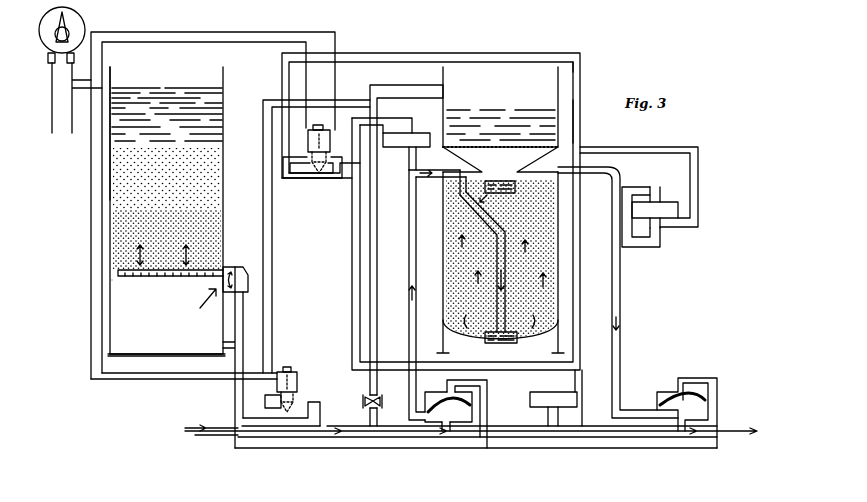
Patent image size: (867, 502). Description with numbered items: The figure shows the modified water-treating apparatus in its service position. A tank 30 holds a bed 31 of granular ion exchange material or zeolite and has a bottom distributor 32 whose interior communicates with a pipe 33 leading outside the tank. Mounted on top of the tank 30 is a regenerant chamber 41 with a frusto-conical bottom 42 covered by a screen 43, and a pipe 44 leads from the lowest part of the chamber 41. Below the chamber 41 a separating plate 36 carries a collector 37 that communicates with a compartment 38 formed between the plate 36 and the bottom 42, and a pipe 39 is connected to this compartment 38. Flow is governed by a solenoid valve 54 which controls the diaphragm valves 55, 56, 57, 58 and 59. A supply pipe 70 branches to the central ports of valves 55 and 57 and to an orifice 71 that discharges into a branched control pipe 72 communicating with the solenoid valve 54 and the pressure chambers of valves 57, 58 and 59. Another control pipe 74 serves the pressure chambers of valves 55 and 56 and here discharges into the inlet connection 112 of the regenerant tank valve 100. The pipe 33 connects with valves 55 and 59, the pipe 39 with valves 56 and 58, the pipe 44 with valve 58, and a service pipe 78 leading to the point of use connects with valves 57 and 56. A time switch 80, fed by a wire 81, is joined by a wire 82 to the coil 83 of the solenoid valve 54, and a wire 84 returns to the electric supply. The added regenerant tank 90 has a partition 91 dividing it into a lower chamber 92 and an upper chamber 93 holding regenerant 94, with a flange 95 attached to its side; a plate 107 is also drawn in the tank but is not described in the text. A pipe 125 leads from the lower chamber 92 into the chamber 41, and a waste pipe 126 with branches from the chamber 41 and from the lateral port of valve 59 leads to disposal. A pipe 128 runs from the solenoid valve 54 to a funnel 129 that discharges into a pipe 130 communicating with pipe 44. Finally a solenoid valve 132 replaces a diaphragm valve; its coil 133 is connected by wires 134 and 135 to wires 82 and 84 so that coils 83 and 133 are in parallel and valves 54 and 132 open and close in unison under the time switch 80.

The tank 30 is at (443, 321).
The bed 31 is at (453, 294).
The bottom distributor 32 is at (492, 344).
The pipe 33 is at (440, 177).
The separating plate 36 is at (452, 180).
The collector 37 is at (518, 187).
The compartment 38 is at (478, 213).
The pipe 39 is at (620, 172).
The regenerant chamber 41 is at (557, 78).
The bottom 42 is at (467, 171).
The screen 43 is at (500, 145).
The pipe 44 is at (681, 147).
The solenoid valve 54 is at (330, 182).
The diaphragm valve 55 is at (452, 409).
The diaphragm valve 56 is at (667, 390).
The diaphragm valve 57 is at (545, 392).
The diaphragm valve 58 is at (667, 197).
The diaphragm valve 59 is at (412, 133).
The supply pipe 70 is at (220, 436).
The orifice 71 is at (368, 395).
The control pipe 72 is at (352, 254).
The control pipe 74 is at (247, 361).
The service pipe 78 is at (733, 433).
The time switch 80 is at (78, 14).
The wire 81 is at (50, 89).
The wire 82 is at (153, 32).
The coil 83 is at (330, 142).
The wire 84 is at (162, 42).
The regenerant tank 90 is at (110, 247).
The partition 91 is at (133, 279).
The lower chamber 92 is at (118, 341).
The upper chamber 93 is at (103, 161).
The regenerant 94 is at (117, 208).
The flange 95 is at (228, 262).
The regenerant tank valve 100 is at (243, 267).
The perforated plate 107 is at (115, 274).
The inlet connection 112 is at (242, 290).
The pipe 125 is at (273, 312).
The waste pipe 126 is at (400, 80).
The pipe 128 is at (466, 53).
The funnel 129 is at (580, 72).
The pipe 130 is at (580, 132).
The solenoid valve 132 is at (265, 401).
The coil 133 is at (297, 372).
The wire 134 is at (142, 380).
The wire 135 is at (205, 374).